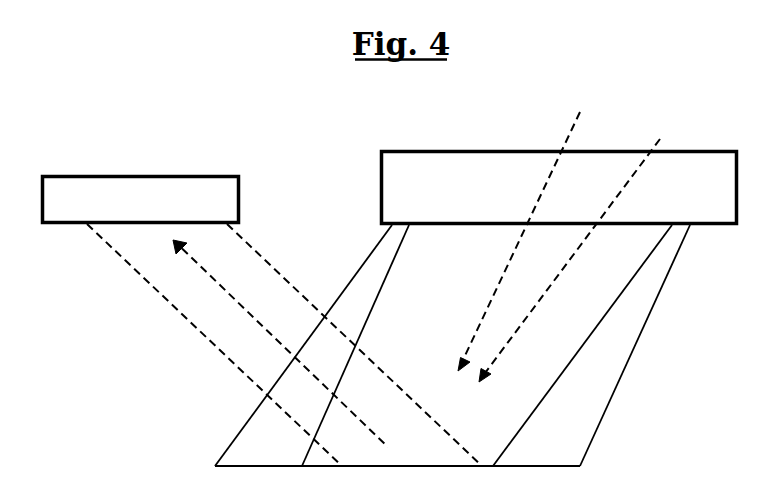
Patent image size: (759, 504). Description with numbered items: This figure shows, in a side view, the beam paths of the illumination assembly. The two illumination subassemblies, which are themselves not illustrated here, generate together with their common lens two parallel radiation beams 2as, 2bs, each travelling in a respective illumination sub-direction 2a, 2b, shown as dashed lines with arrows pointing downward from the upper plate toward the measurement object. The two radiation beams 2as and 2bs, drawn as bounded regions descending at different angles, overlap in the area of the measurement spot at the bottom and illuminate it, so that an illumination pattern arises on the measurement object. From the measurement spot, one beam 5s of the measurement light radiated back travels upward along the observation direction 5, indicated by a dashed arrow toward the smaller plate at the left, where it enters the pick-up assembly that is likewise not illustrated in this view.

The illumination sub-direction 2a is at (627, 185).
The illumination sub-direction 2b is at (533, 210).
The radiation beam 2as is at (262, 442).
The radiation beam 2bs is at (593, 413).
The observation direction 5 is at (232, 295).
The beam of measurement light 5s is at (185, 285).